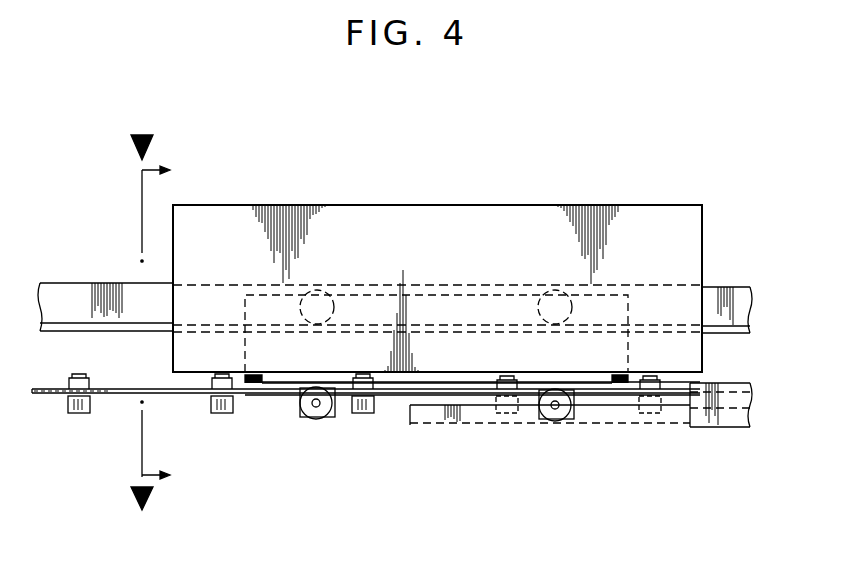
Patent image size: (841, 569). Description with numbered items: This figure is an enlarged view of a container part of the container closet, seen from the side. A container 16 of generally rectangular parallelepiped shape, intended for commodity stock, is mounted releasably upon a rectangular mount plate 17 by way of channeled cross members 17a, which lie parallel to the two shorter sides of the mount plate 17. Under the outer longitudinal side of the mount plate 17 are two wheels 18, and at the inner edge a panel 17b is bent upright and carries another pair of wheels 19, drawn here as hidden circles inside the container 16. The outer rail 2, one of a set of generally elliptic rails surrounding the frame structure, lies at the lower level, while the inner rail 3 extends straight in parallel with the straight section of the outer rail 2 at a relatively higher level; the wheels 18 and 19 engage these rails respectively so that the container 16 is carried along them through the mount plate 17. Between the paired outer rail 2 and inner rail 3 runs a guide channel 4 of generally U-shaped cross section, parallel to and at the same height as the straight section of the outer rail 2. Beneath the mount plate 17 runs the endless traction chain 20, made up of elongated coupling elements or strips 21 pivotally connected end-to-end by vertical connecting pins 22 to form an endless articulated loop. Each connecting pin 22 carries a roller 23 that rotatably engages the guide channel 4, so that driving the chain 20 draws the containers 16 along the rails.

The outer rail 2 is at (735, 430).
The inner rail 3 is at (733, 290).
The guide channel 4 is at (460, 425).
The container 16 is at (452, 205).
The mount plate 17 is at (280, 393).
The channeled cross member 17a is at (237, 393).
The panel 17b is at (455, 300).
The wheel 18 is at (316, 420).
The wheel 19 is at (318, 291).
The endless traction chain 20 is at (125, 396).
The coupling element 21 is at (177, 395).
The connecting pin 22 is at (78, 416).
The roller 23 is at (72, 404).